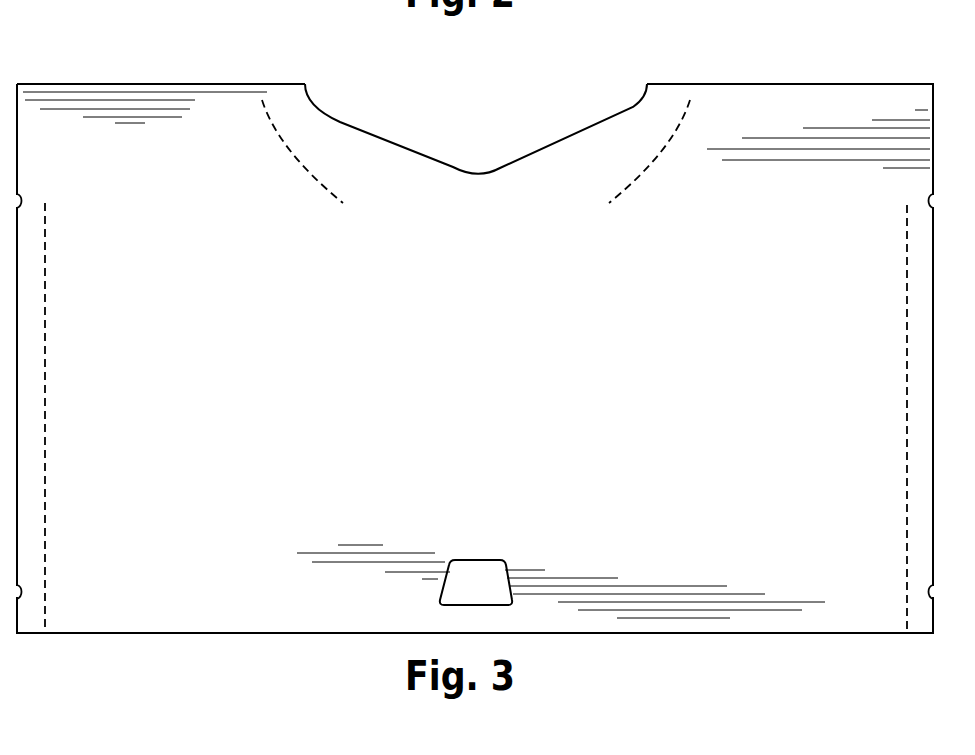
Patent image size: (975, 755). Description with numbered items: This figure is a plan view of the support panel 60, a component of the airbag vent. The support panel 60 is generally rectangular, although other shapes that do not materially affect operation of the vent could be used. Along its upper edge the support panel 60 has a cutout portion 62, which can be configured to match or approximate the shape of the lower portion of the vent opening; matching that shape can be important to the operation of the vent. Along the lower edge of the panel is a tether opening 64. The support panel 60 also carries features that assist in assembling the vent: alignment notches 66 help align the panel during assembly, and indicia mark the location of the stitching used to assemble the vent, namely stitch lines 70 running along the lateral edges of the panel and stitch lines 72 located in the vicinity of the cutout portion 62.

The support panel 60 is at (88, 62).
The cutout portion 62 is at (385, 142).
The tether opening 64 is at (480, 578).
The alignment notches 66 is at (20, 198).
The stitch lines 70 is at (47, 374).
The stitch lines 72 is at (293, 157).